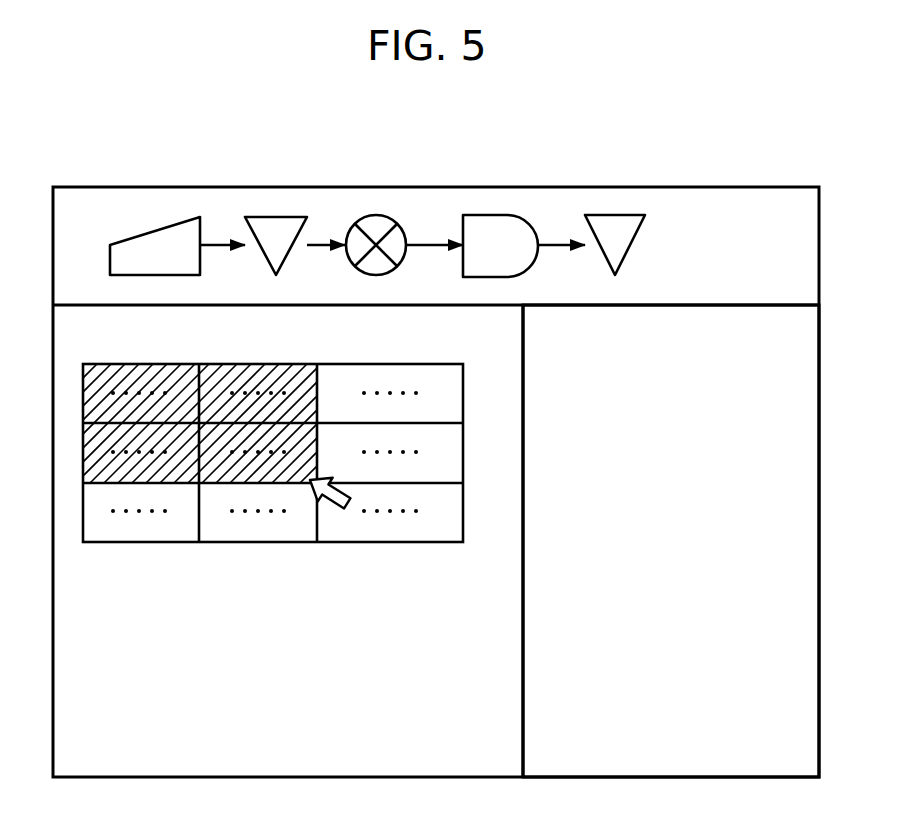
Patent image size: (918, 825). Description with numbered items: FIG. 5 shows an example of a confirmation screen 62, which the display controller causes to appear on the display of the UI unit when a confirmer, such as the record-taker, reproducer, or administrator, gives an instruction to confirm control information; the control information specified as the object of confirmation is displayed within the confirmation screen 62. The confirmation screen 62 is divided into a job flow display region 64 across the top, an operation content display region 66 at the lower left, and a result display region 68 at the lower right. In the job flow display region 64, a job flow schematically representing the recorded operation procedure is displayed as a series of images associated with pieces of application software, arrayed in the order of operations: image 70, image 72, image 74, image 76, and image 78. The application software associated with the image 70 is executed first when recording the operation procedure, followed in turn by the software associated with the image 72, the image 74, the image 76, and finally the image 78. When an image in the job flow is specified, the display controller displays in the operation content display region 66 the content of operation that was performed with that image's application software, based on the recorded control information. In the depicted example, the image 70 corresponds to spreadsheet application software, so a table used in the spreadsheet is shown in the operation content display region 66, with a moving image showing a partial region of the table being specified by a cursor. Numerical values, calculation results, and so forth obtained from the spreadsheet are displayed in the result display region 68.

The confirmation screen 62 is at (695, 187).
The job flow display region 64 is at (781, 257).
The operation content display region 66 is at (132, 672).
The result display region 68 is at (603, 687).
The image 70 is at (155, 231).
The image 72 is at (270, 217).
The image 74 is at (376, 215).
The image 76 is at (492, 215).
The image 78 is at (611, 215).